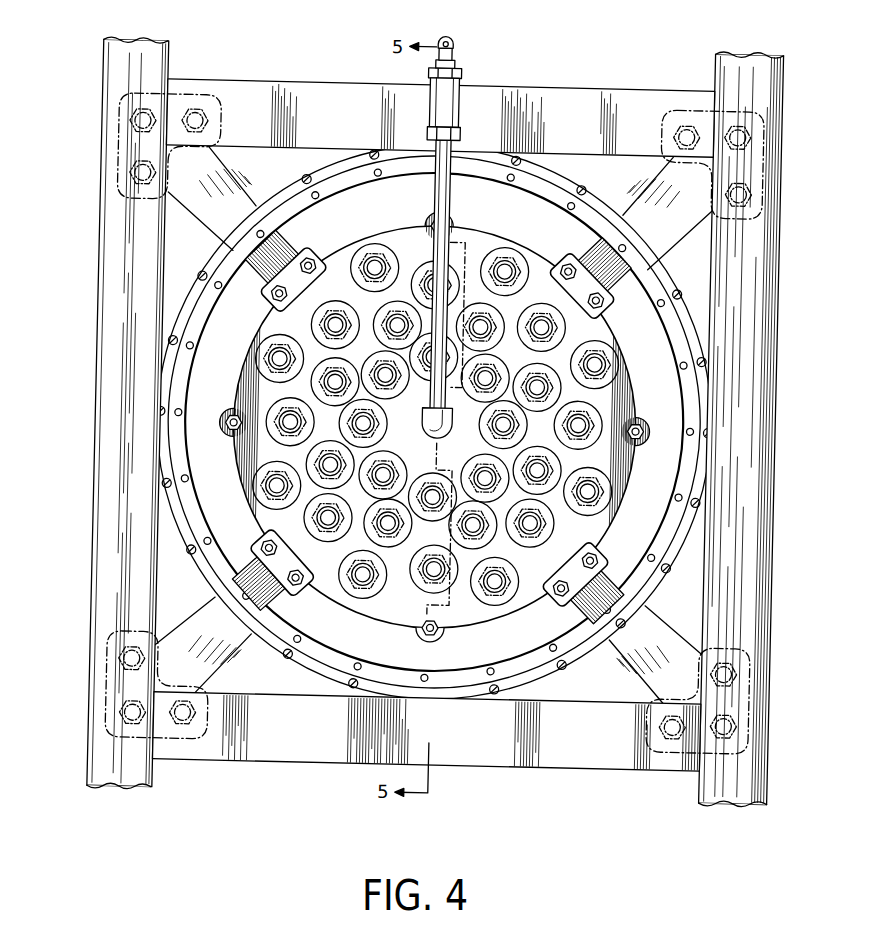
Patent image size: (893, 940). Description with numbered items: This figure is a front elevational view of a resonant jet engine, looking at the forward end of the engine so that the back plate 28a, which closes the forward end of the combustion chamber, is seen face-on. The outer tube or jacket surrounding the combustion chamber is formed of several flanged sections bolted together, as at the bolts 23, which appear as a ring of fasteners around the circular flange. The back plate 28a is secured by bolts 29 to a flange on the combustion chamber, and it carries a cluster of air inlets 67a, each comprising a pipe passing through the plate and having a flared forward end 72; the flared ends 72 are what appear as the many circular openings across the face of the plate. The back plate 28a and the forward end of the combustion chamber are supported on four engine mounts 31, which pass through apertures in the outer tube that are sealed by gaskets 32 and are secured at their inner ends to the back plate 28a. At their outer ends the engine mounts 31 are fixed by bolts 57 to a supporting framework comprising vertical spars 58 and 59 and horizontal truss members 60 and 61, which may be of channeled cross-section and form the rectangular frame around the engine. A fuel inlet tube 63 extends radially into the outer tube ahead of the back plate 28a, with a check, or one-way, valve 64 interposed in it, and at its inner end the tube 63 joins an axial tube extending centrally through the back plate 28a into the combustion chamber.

The bolts 23 is at (577, 191).
The back plate 28a is at (267, 458).
The bolts 29 is at (442, 634).
The engine mounts 31 is at (217, 190).
The gaskets 32 is at (643, 258).
The bolts 57 is at (743, 136).
The vertical spar 58 is at (760, 300).
The vertical spar 59 is at (97, 276).
The horizontal truss member 60 is at (592, 94).
The horizontal truss member 61 is at (498, 762).
The fuel inlet tube 63 is at (444, 42).
The check valve 64 is at (451, 109).
The air inlets 67a is at (371, 244).
The flared forward end 72 is at (508, 258).